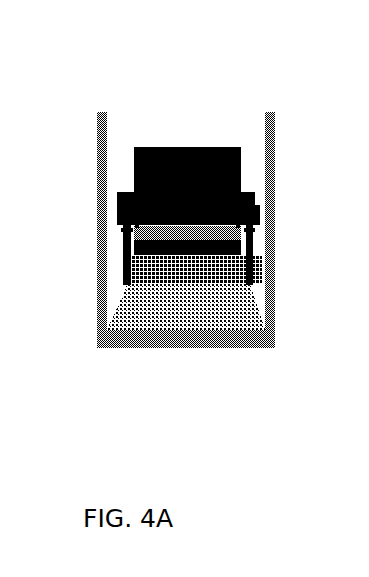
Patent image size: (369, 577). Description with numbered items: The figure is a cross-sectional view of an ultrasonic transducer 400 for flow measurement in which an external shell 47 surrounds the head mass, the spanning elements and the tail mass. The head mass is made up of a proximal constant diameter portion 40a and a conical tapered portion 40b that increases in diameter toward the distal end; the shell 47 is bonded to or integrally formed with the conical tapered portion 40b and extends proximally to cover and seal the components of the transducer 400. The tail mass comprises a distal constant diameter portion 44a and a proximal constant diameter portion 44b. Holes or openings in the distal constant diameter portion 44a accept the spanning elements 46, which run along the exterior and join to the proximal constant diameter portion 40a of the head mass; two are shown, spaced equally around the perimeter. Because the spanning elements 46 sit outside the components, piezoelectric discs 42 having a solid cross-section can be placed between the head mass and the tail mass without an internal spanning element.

The ultrasonic transducer 400 is at (201, 48).
The shell 47 is at (97, 160).
The proximal constant diameter portion 44b is at (241, 163).
The distal constant diameter portion 44a is at (260, 218).
The piezoelectric discs 42 is at (123, 238).
The spanning element 46 is at (126, 248).
The proximal constant diameter portion 40a is at (222, 275).
The conical tapered portion 40b is at (233, 327).